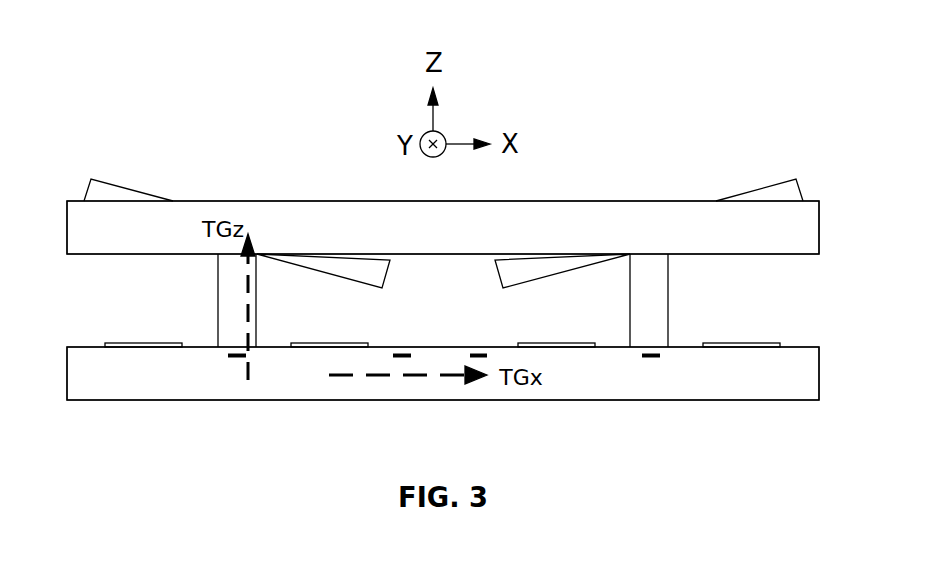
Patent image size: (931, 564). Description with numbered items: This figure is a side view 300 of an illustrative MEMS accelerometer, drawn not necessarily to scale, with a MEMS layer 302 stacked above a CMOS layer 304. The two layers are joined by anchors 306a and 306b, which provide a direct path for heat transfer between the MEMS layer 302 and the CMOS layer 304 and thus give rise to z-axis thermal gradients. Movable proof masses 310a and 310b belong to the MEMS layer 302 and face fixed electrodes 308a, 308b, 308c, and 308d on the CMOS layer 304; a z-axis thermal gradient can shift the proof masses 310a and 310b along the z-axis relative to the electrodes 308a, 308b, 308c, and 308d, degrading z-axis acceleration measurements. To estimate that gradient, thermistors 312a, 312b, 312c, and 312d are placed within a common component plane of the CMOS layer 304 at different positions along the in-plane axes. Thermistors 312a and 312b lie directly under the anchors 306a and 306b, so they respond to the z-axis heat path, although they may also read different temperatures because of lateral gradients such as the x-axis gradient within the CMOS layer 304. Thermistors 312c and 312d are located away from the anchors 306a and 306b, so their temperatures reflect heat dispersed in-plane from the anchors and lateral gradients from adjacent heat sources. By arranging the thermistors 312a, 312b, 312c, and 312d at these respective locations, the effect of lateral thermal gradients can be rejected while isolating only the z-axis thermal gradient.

The side view 300 is at (465, 25).
The MEMS layer 302 is at (67, 213).
The CMOS layer 304 is at (67, 389).
The anchor 306a is at (218, 333).
The anchor 306b is at (630, 332).
The fixed electrode 308a is at (120, 342).
The fixed electrode 308b is at (318, 347).
The fixed electrode 308c is at (557, 347).
The fixed electrode 308d is at (740, 342).
The movable proof mass 310a is at (116, 185).
The movable proof mass 310b is at (744, 192).
The thermistor 312a is at (240, 362).
The thermistor 312b is at (650, 362).
The thermistor 312c is at (402, 360).
The thermistor 312d is at (485, 360).